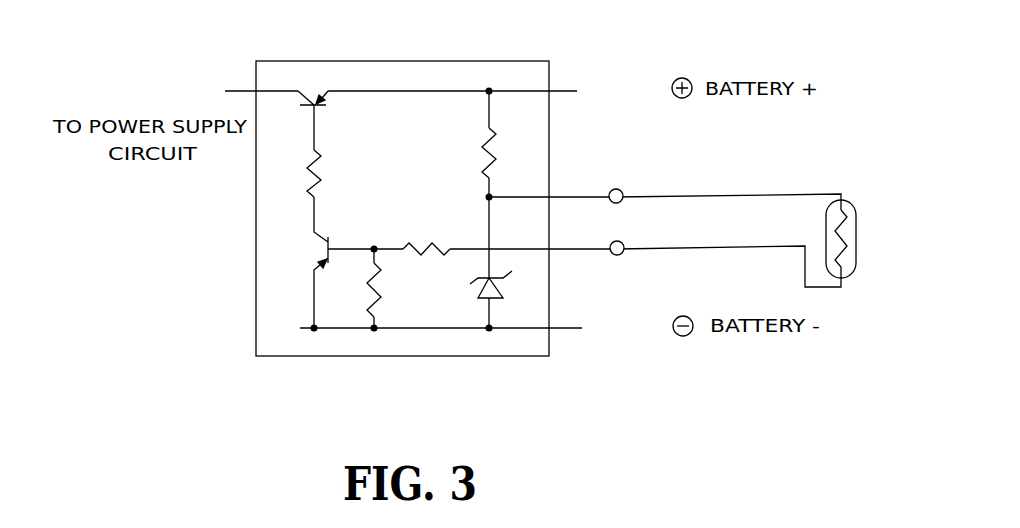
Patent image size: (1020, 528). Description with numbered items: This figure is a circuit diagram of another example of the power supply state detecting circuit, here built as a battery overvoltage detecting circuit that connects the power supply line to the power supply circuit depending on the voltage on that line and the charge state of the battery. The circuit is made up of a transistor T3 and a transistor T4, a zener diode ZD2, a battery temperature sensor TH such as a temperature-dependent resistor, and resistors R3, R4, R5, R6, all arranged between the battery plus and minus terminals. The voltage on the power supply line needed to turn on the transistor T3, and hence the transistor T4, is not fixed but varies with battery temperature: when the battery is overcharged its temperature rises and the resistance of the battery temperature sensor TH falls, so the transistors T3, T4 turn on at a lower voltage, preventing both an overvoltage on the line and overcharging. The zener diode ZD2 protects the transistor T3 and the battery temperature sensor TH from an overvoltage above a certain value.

The transistor T4 is at (299, 120).
The transistor T3 is at (299, 262).
The resistor R3 is at (332, 173).
The resistor R4 is at (470, 170).
The resistor R5 is at (426, 235).
The resistor R6 is at (355, 288).
The zener diode ZD2 is at (468, 288).
The battery temperature sensor TH is at (857, 252).